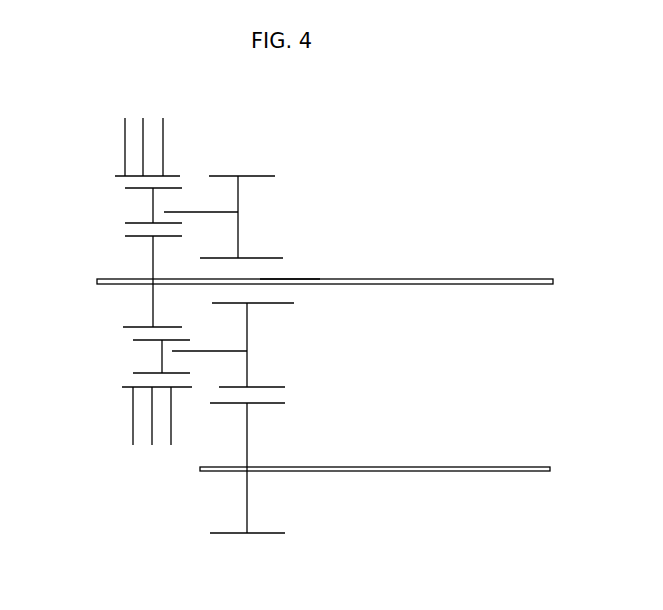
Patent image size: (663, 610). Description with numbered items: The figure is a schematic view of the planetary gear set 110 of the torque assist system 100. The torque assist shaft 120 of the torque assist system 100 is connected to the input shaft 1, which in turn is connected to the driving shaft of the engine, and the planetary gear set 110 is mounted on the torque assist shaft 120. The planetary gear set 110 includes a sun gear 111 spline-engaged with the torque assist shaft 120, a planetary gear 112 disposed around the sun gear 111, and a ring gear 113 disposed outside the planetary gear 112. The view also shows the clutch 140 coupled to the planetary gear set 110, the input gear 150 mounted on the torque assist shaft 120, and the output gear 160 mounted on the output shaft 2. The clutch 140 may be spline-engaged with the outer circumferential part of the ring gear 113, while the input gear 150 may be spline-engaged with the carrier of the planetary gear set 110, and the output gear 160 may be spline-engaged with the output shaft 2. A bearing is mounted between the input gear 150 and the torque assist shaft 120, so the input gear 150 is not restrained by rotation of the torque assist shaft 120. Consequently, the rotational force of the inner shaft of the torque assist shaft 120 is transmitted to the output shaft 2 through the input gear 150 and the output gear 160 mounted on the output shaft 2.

The torque assist system 100 is at (364, 140).
The planetary gear set 110 is at (65, 229).
The sun gear 111 is at (153, 303).
The planetary gear 112 is at (152, 204).
The ring gear 113 is at (172, 175).
The torque assist shaft 120 is at (287, 279).
The clutch 140 is at (125, 145).
The input gear 150 is at (250, 175).
The output gear 160 is at (249, 432).
The input shaft 1 is at (533, 279).
The output shaft 2 is at (535, 467).